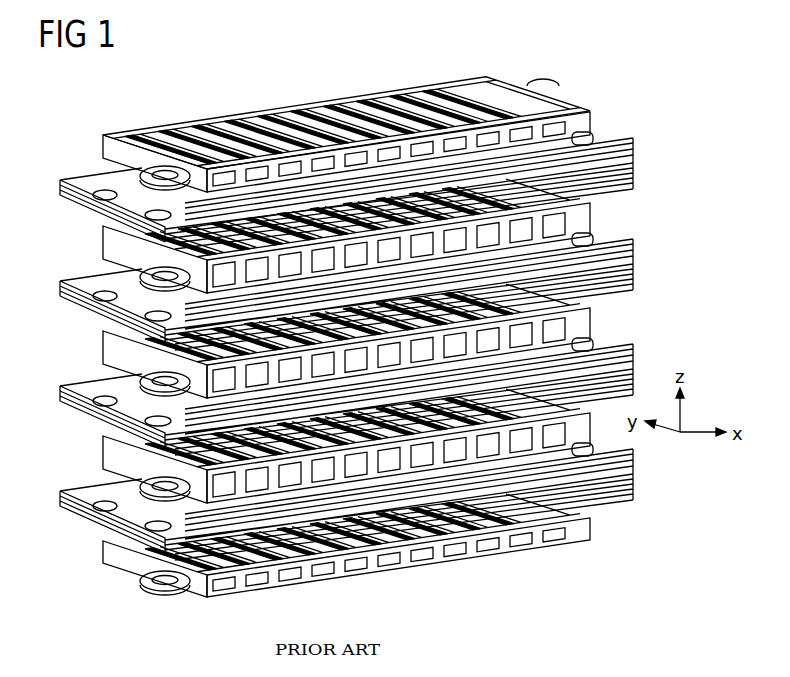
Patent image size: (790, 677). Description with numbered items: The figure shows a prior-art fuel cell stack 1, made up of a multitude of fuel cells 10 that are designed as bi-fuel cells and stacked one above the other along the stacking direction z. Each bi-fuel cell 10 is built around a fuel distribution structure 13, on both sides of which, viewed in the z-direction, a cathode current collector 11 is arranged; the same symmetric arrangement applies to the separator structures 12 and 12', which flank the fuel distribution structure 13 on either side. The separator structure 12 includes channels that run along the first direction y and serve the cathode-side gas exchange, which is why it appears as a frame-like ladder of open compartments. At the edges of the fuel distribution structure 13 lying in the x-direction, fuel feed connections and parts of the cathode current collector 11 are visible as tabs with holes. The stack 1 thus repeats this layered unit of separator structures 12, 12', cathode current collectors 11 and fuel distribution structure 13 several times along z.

The fuel cell stack 1 is at (68, 140).
The fuel cell 10 is at (712, 118).
The cathode current collector 11 is at (636, 145).
The separator structure 12 is at (406, 148).
The separator structure 12' is at (391, 235).
The fuel distribution structure 13 is at (634, 162).